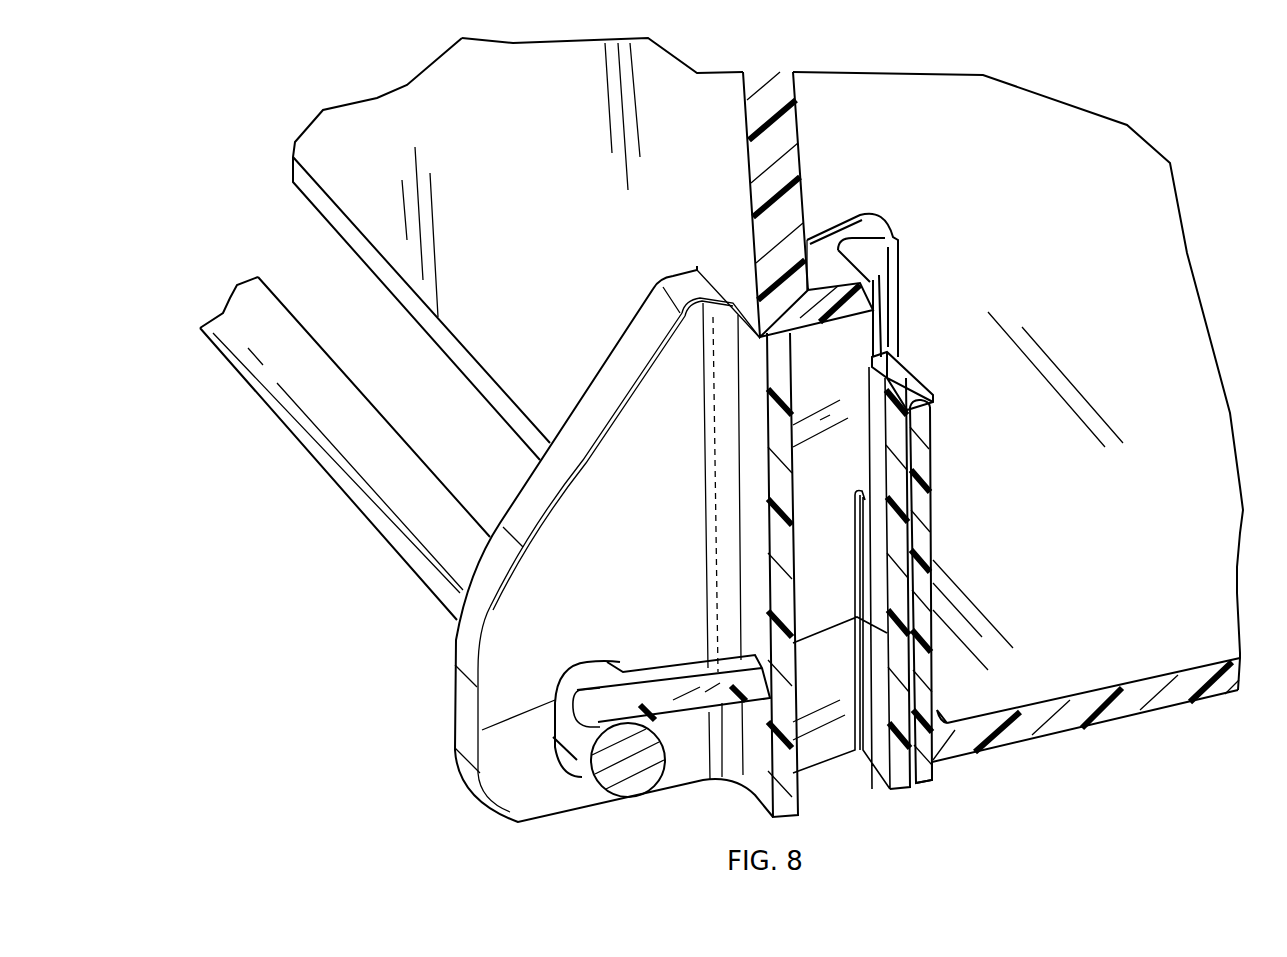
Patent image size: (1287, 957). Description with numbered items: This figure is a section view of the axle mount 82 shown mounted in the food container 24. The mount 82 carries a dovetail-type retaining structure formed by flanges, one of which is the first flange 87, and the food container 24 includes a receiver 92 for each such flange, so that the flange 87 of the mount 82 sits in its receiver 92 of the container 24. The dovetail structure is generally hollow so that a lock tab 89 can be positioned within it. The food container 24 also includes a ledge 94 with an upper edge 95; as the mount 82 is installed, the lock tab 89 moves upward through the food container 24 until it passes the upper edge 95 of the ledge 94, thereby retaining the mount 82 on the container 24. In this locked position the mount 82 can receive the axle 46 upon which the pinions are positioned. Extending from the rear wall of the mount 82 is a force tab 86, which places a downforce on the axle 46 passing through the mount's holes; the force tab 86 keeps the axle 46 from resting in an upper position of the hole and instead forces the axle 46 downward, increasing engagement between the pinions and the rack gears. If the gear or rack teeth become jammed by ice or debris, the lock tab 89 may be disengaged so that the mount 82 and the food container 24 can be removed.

The food container 24 is at (1170, 513).
The mount 82 is at (470, 800).
The force tab 86 is at (607, 697).
The axle 46 is at (637, 783).
The first flange 87 is at (837, 520).
The receiver 92 is at (857, 230).
The lock tab 89 is at (930, 372).
The upper edge 95 is at (940, 418).
The ledge 94 is at (918, 490).